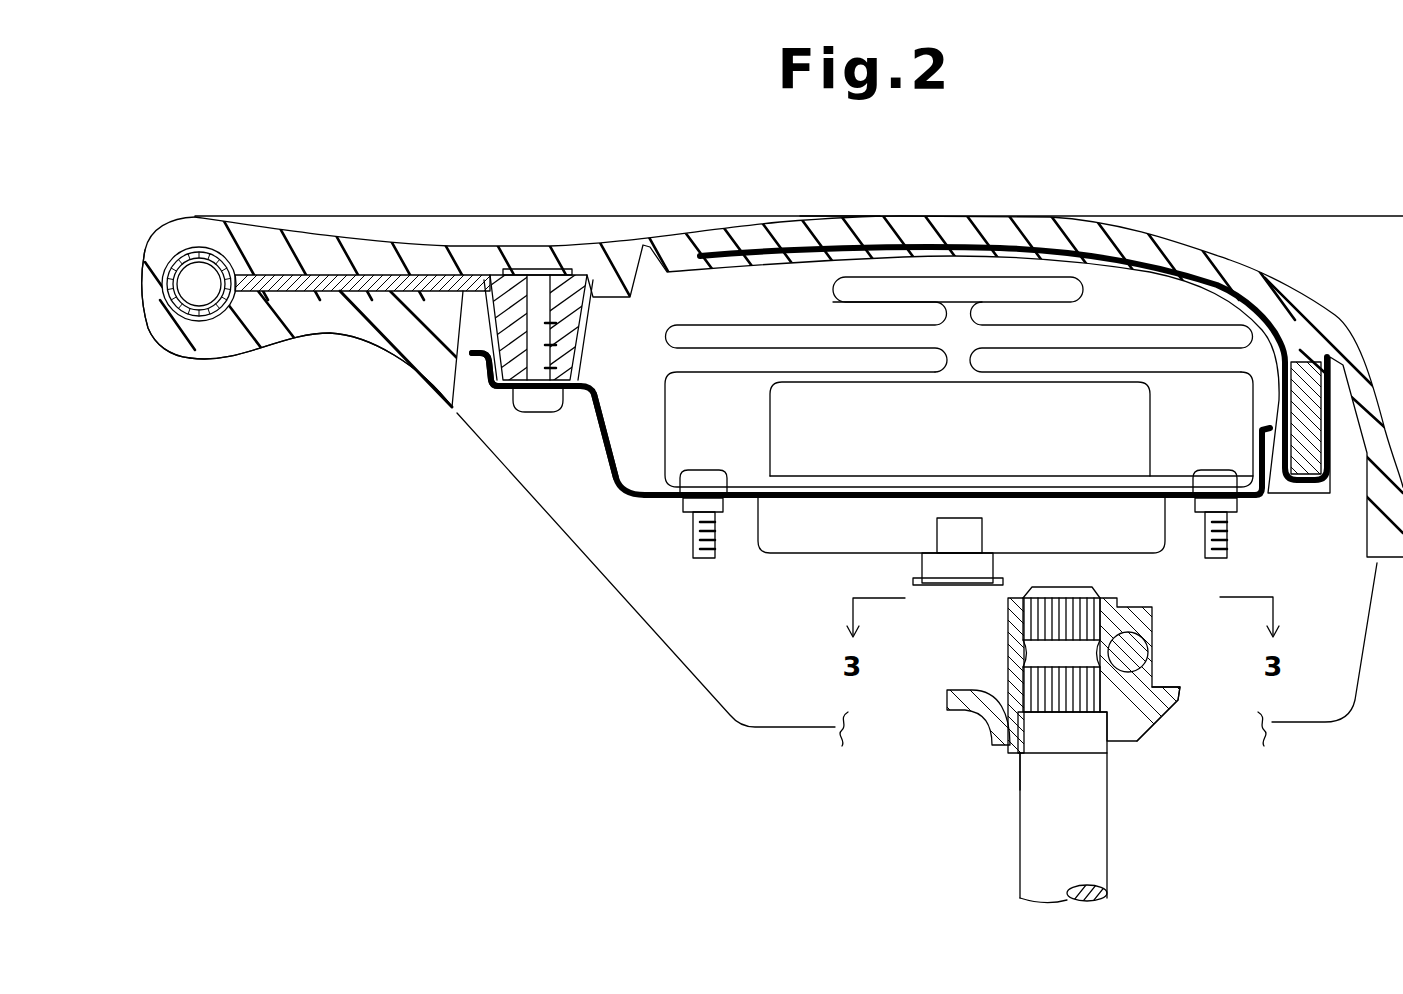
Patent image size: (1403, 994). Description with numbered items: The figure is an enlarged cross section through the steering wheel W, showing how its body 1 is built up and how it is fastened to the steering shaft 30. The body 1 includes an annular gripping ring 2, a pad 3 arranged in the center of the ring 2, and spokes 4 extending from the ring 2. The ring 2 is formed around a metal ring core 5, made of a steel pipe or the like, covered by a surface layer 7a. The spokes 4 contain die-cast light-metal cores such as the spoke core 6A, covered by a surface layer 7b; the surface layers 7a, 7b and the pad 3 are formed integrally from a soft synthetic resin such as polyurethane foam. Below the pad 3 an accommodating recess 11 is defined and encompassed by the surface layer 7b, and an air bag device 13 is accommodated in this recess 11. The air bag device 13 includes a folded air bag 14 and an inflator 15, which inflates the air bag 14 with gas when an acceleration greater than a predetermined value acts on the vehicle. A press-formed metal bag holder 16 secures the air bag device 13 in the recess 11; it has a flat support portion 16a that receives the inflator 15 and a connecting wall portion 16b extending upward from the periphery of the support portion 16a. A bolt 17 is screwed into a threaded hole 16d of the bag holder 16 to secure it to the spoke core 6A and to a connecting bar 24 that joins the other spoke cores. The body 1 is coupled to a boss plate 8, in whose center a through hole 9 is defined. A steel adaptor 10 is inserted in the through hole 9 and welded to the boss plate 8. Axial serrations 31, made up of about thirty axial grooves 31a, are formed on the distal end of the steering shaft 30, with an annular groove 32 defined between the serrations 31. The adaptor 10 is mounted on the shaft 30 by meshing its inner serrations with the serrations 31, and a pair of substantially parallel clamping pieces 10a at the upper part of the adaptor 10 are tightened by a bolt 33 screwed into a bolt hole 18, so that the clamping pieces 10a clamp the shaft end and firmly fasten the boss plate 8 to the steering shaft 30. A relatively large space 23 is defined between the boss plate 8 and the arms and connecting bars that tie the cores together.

The body 1 is at (550, 214).
The steering wheel W is at (840, 208).
The annular gripping ring 2 is at (180, 225).
The pad 3 is at (990, 223).
The spokes 4 is at (350, 333).
The ring core 5 is at (143, 250).
The spoke core 6A is at (287, 297).
The surface layer 7a is at (150, 320).
The surface layer 7b is at (402, 362).
The boss plate 8 is at (972, 720).
The through hole 9 is at (1013, 757).
The adaptor 10 is at (1010, 680).
The clamping pieces 10a is at (1127, 613).
The accommodating recess 11 is at (822, 294).
The air bag device 13 is at (795, 575).
The air bag 14 is at (693, 313).
The inflator 15 is at (770, 425).
The bag holder 16 is at (610, 405).
The support portion 16a is at (663, 500).
The connecting wall portion 16b is at (605, 450).
The threaded holes 16d is at (555, 400).
The bolt 17 is at (530, 405).
The bolt hole 18 is at (1147, 643).
The space 23 is at (582, 582).
The connecting bar 24 is at (1305, 478).
The steering shaft 30 is at (1108, 850).
The serrations 31 is at (1040, 614).
The axial grooves 31a is at (1040, 692).
The annular groove 32 is at (1060, 657).
The bolt 33 is at (1133, 658).